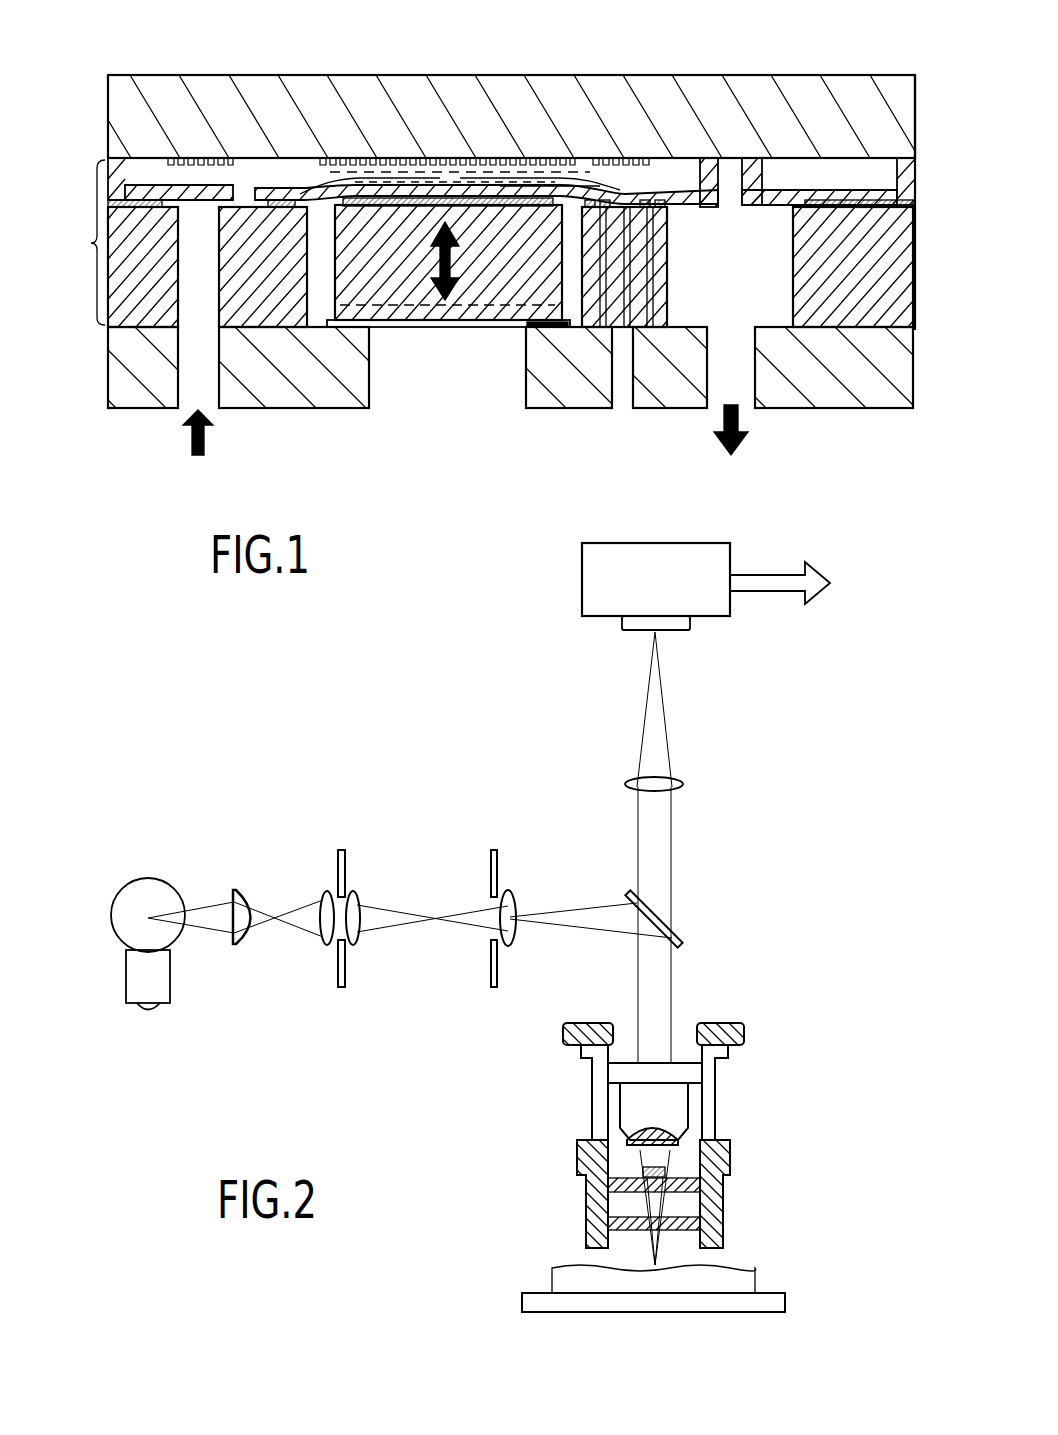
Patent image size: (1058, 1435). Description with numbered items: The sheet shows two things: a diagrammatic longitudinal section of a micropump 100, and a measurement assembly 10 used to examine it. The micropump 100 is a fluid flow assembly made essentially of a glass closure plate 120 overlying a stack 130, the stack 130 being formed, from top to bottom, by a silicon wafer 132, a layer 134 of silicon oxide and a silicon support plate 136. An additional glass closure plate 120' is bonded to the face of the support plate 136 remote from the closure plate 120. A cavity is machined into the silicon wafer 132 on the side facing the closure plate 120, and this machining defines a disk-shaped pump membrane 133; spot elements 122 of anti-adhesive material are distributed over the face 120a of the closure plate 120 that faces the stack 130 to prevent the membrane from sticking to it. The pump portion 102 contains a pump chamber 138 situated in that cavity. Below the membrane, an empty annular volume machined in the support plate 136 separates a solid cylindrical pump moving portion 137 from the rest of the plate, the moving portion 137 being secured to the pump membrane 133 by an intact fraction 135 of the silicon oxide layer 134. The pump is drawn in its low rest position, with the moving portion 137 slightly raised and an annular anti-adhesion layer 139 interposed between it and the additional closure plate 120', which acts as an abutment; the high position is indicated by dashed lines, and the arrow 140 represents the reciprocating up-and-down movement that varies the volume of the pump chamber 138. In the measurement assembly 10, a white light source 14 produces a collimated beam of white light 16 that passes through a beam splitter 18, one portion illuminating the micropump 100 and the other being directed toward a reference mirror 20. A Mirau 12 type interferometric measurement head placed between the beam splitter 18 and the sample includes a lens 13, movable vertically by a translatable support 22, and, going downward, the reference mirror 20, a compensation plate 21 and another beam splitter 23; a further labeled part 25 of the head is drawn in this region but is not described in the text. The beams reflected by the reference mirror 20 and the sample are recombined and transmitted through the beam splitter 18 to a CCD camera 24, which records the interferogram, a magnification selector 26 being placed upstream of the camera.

In FIG. 1, the micropump 100 is at (145, 412).
In FIG. 2, the micropump 100 is at (753, 1273).
In FIG. 1, the pump portion 102 is at (440, 415).
In FIG. 1, the glass closure plate 120 is at (511, 90).
In FIG. 1, the face of the closure plate 120a is at (267, 177).
In FIG. 1, the additional glass closure plate 120' is at (834, 389).
In FIG. 1, the spot elements 122 is at (455, 182).
In FIG. 1, the stack 130 is at (182, 243).
In FIG. 1, the silicon wafer 132 is at (905, 172).
In FIG. 1, the pump membrane 133 is at (497, 176).
In FIG. 1, the layer of silicon oxide 134 is at (912, 207).
In FIG. 1, the fraction of the silicon oxide layer 135 is at (560, 190).
In FIG. 1, the silicon support plate 136 is at (893, 307).
In FIG. 1, the pump moving portion 137 is at (343, 297).
In FIG. 1, the pump chamber 138 is at (365, 176).
In FIG. 1, the anti-adhesion layer 139 is at (527, 327).
In FIG. 1, the arrow 140 is at (437, 258).
In FIG. 2, the measurement assembly 10 is at (450, 1063).
In FIG. 2, the Mirau type interferometric measurement head 12 is at (638, 1146).
In FIG. 2, the lens 13 is at (625, 1118).
In FIG. 2, the white light source 14 is at (128, 905).
In FIG. 2, the collimated beam of white light 16 is at (635, 907).
In FIG. 2, the beam splitter 18 is at (680, 945).
In FIG. 2, the reference mirror 20 is at (643, 1170).
In FIG. 2, the compensation plate 21 is at (723, 1175).
In FIG. 2, the support 22 is at (730, 1035).
In FIG. 2, the beam splitter 23 is at (625, 1232).
In FIG. 2, the CCD camera 24 is at (603, 583).
In FIG. 2, the upper holder plate 25 is at (617, 1186).
In FIG. 2, the magnification selector 26 is at (678, 783).